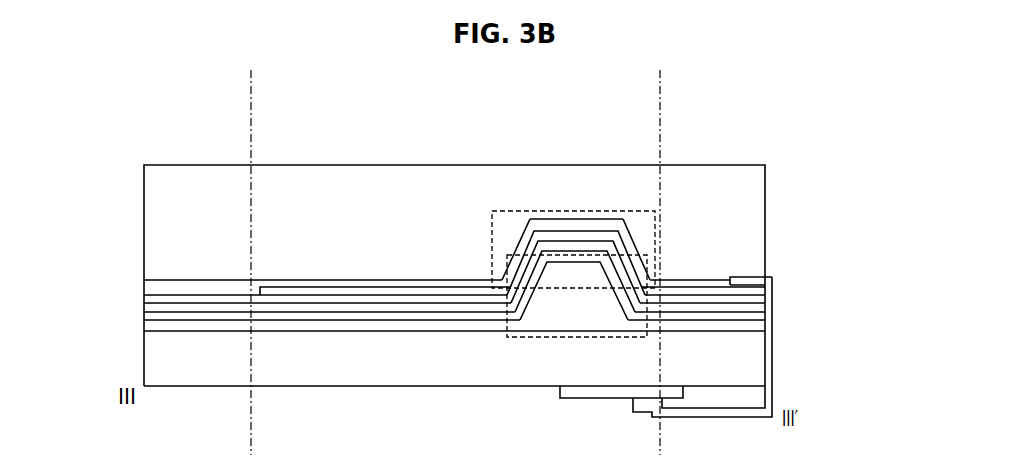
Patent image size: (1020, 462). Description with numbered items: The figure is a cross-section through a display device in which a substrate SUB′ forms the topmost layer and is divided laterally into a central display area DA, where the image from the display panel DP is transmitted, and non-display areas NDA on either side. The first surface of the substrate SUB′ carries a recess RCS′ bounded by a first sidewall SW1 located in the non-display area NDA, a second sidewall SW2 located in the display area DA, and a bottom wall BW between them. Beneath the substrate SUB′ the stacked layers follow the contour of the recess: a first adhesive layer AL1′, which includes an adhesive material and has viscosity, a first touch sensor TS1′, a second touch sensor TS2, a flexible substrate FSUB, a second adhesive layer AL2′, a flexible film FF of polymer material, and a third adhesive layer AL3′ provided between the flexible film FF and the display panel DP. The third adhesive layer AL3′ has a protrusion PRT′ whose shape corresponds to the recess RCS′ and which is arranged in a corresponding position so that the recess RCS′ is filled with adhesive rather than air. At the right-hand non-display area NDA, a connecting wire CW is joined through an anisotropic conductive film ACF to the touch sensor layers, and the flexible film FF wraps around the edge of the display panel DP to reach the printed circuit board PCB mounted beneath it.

The non-display area NDA is at (444, 82).
The display area DA is at (452, 82).
The substrate SUB′ is at (157, 207).
The flexible substrate FSUB is at (153, 298).
The first adhesive layer AL1′ is at (702, 278).
The second adhesive layer AL2′ is at (152, 307).
The third adhesive layer AL3′ is at (152, 326).
The second touch sensor TS2 is at (348, 287).
The first touch sensor TS1′ is at (767, 294).
The first sidewall SW1 is at (643, 262).
The second sidewall SW2 is at (520, 258).
The bottom wall BW is at (555, 218).
The recess RCS′ is at (587, 210).
The protrusion PRT′ is at (537, 337).
The connecting wire CW is at (768, 279).
The anisotropic conductive film ACF is at (768, 284).
The flexible film FF is at (768, 318).
The display panel DP is at (755, 368).
The printed circuit board PCB is at (600, 400).